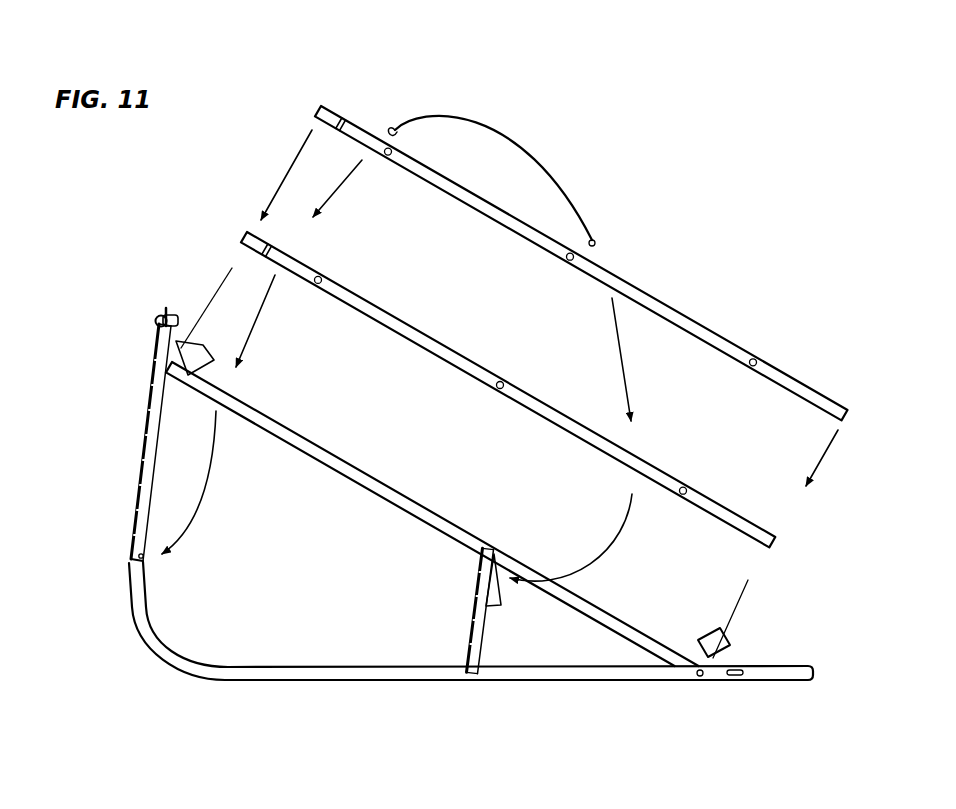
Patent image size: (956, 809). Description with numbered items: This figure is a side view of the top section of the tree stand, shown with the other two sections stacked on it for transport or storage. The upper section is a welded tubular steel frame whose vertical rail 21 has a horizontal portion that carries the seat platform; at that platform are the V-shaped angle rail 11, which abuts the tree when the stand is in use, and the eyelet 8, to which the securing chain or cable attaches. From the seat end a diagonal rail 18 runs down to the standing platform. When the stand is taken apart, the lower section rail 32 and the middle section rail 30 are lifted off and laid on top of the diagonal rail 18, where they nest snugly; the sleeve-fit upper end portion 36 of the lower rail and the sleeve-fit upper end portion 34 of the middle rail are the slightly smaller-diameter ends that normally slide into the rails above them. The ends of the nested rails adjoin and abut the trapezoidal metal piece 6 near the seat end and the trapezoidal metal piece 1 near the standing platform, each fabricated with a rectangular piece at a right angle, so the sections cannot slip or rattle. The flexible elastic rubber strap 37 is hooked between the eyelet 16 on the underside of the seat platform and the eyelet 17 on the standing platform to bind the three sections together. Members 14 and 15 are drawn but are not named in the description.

The trapezoidal metal piece 1 is at (720, 648).
The trapezoidal metal piece 6 is at (205, 351).
The eyelet 8 is at (158, 322).
The V-shaped angle rail 11 is at (167, 318).
The upright post 14 is at (150, 472).
The support strut 15 is at (485, 632).
The eyelet 16 is at (146, 557).
The eyelet 17 is at (476, 606).
The diagonal rail 18 is at (380, 478).
The vertical rail 21 is at (345, 683).
The middle section vertical rail 30 is at (640, 457).
The lower section vertical rail 32 is at (645, 292).
The sleeve-fit upper end portion 34 is at (247, 243).
The sleeve-fit upper end portion 36 is at (333, 108).
The flexible elastic rubber strap 37 is at (540, 146).